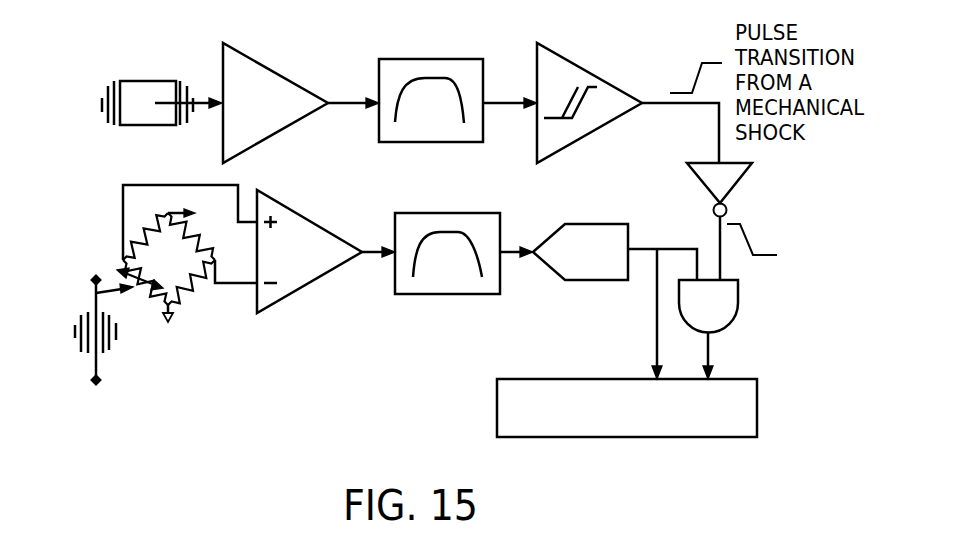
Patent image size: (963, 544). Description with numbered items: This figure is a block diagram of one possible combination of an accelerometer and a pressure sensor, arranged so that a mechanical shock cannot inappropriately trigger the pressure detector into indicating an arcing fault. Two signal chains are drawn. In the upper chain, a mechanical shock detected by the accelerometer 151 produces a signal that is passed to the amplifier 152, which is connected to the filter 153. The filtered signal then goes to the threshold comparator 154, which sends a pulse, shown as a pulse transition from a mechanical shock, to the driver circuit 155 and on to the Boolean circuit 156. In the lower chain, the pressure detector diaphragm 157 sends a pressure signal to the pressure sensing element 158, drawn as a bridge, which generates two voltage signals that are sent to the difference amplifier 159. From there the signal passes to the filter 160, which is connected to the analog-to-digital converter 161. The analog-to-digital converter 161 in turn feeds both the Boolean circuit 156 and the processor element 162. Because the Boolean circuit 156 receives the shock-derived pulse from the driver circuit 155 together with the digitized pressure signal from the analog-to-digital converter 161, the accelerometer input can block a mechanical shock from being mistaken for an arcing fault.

The accelerometer 151 is at (135, 88).
The amplifier 152 is at (245, 65).
The filter 153 is at (438, 65).
The threshold comparator 154 is at (558, 65).
The driver circuit 155 is at (736, 180).
The Boolean circuit 156 is at (732, 303).
The pressure detector diaphragm 157 is at (73, 332).
The pressure sensing element 158 is at (170, 262).
The difference amplifier 159 is at (305, 222).
The filter 160 is at (457, 218).
The analog-to-digital converter 161 is at (583, 228).
The processor element 162 is at (742, 398).